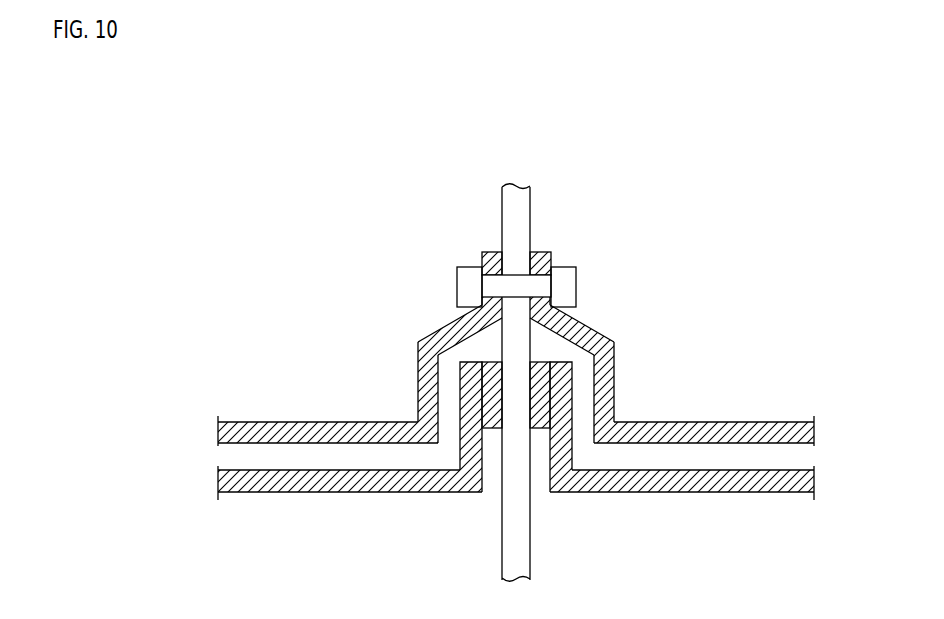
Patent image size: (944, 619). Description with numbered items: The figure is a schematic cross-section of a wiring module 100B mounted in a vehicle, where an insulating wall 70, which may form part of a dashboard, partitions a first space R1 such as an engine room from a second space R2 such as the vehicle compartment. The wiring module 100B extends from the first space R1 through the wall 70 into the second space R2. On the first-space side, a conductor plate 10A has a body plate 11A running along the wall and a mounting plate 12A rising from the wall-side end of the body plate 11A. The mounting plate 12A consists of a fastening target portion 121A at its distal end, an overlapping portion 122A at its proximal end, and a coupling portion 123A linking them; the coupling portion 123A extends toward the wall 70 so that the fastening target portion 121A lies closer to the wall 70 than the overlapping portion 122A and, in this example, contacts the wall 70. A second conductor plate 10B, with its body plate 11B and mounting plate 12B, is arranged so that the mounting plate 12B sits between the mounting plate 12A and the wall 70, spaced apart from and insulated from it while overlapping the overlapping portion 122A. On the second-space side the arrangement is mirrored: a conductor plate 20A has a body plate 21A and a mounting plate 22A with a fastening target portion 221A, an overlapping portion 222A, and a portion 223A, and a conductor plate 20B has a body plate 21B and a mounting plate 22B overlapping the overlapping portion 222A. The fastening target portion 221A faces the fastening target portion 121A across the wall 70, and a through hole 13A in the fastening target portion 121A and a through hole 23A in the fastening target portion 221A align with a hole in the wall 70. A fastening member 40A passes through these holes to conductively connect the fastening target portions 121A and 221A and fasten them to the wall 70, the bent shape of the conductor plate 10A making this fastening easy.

The wiring module 100B is at (667, 204).
The wall 70 is at (513, 191).
The fastening member 40A is at (520, 286).
The through hole 13A is at (488, 296).
The through hole 23A is at (545, 296).
The conductor plate 10A is at (362, 246).
The body plate 11A is at (258, 427).
The mounting plate 12A is at (323, 265).
The fastening target portion 121A is at (482, 258).
The overlapping portion 122A is at (418, 377).
The coupling portion 123A is at (448, 326).
The conductor plate 20A is at (748, 296).
The body plate 21A is at (782, 432).
The mounting plate 22A is at (715, 263).
The fastening target portion 221A is at (551, 258).
The overlapping portion 222A is at (615, 377).
The second flange inclined portion 223A is at (584, 326).
The conductor plate 10B is at (403, 555).
The body plate 11B is at (317, 493).
The mounting plate 12B is at (470, 450).
The conductor plate 20B is at (738, 555).
The body plate 21B is at (718, 493).
The mounting plate 22B is at (565, 450).
The first space R1 is at (222, 293).
The second space R2 is at (844, 270).